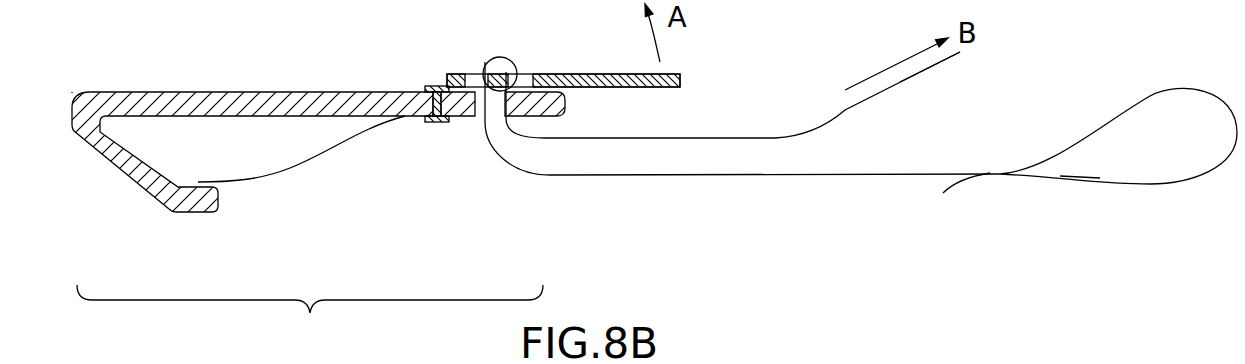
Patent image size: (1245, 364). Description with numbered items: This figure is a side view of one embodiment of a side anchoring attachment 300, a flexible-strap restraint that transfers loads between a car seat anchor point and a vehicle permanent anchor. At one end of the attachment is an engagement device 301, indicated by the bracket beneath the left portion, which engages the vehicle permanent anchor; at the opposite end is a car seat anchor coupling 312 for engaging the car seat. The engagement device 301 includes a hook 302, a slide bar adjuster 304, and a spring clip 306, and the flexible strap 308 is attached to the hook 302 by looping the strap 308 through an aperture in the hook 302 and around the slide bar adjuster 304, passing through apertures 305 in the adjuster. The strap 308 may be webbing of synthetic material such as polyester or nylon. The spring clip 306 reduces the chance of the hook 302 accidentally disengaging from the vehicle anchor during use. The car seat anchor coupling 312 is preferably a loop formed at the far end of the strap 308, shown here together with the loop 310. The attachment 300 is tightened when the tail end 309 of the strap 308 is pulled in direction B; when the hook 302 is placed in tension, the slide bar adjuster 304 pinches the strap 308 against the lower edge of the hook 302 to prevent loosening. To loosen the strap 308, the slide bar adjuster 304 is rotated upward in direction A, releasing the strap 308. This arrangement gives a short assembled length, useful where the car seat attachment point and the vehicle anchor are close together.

The side anchoring attachment 300 is at (384, 216).
The engagement device 301 is at (310, 317).
The hook 302 is at (248, 92).
The slide bar adjuster 304 is at (681, 80).
The apertures 305 is at (476, 117).
The spring clip 306 is at (273, 179).
The flexible strap 308 is at (845, 175).
The tail end 309 is at (958, 54).
The loop 310 is at (1150, 95).
The car seat anchor coupling 312 is at (1092, 208).